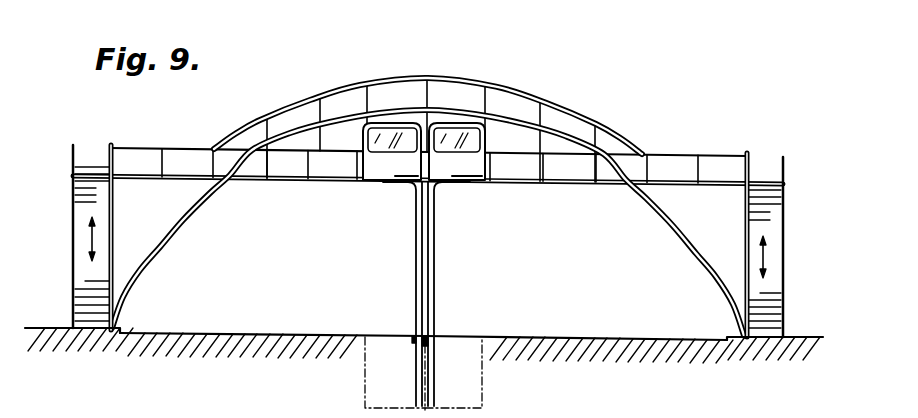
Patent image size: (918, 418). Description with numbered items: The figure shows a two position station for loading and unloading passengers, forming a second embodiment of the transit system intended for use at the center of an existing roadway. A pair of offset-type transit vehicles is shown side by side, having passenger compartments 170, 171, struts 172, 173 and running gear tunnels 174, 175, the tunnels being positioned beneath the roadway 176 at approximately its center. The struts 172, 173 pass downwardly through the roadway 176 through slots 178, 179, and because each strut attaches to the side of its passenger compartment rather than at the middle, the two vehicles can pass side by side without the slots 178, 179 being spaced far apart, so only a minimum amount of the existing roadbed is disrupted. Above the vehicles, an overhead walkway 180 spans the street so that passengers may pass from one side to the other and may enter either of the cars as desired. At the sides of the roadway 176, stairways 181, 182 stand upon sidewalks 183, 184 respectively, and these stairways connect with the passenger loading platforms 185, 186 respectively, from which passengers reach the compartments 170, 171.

The passenger compartment 170 is at (477, 183).
The passenger compartment 171 is at (366, 176).
The strut 172 is at (435, 263).
The strut 173 is at (415, 266).
The running gear tunnel 174 is at (468, 385).
The running gear tunnel 175 is at (382, 385).
The roadway 176 is at (490, 336).
The slot 178 is at (432, 338).
The slot 179 is at (413, 335).
The overhead walkway 180 is at (393, 106).
The stairway 181 is at (770, 212).
The stairway 182 is at (92, 291).
The sidewalk 183 is at (800, 337).
The sidewalk 184 is at (59, 328).
The passenger loading platform 185 is at (577, 182).
The passenger loading platform 186 is at (203, 177).